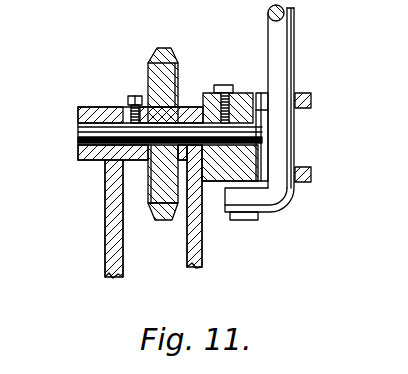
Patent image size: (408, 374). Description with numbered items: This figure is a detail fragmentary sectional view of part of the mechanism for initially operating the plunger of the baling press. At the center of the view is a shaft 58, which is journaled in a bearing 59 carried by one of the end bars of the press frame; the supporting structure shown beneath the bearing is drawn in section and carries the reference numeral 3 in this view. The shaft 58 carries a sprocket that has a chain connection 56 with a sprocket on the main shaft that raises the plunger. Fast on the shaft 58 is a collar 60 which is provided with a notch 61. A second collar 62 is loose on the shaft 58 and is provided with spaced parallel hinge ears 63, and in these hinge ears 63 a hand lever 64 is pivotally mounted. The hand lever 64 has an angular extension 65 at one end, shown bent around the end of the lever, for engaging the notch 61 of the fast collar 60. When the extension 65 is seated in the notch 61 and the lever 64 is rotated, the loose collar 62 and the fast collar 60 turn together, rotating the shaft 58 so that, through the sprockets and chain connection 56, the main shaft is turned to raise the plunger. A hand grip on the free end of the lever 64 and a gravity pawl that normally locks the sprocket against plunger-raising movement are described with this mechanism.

The leg 3 is at (104, 216).
The chain connection 56 is at (177, 60).
The shaft 58 is at (80, 144).
The bearing 59 is at (78, 106).
The collar 60 is at (222, 181).
The notch 61 is at (255, 220).
The second collar 62 is at (259, 162).
The hinge ears 63 is at (317, 175).
The hand lever 64 is at (283, 72).
The angular extension 65 is at (291, 200).